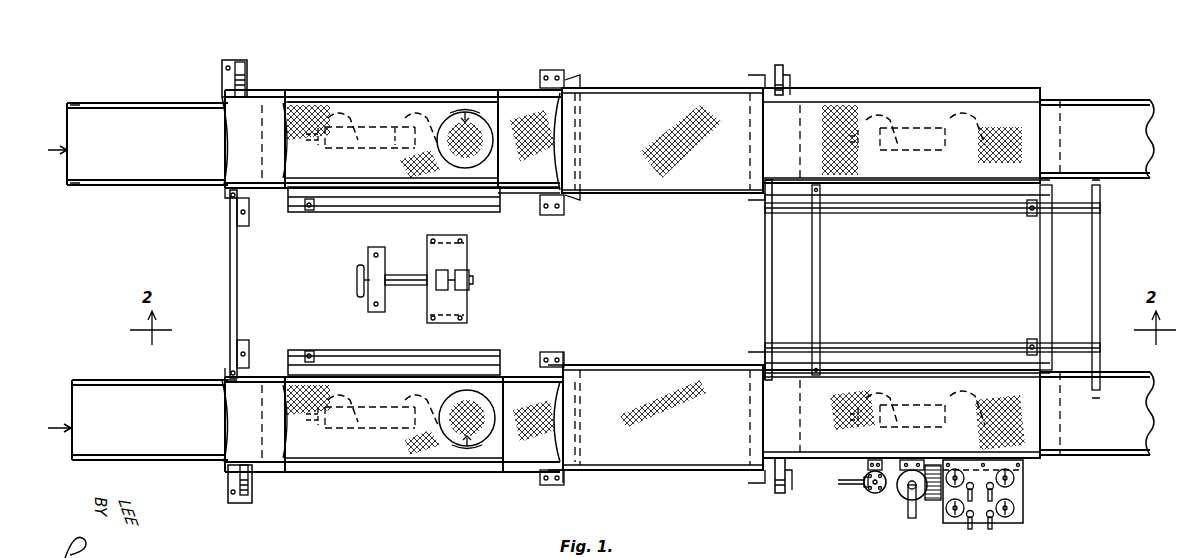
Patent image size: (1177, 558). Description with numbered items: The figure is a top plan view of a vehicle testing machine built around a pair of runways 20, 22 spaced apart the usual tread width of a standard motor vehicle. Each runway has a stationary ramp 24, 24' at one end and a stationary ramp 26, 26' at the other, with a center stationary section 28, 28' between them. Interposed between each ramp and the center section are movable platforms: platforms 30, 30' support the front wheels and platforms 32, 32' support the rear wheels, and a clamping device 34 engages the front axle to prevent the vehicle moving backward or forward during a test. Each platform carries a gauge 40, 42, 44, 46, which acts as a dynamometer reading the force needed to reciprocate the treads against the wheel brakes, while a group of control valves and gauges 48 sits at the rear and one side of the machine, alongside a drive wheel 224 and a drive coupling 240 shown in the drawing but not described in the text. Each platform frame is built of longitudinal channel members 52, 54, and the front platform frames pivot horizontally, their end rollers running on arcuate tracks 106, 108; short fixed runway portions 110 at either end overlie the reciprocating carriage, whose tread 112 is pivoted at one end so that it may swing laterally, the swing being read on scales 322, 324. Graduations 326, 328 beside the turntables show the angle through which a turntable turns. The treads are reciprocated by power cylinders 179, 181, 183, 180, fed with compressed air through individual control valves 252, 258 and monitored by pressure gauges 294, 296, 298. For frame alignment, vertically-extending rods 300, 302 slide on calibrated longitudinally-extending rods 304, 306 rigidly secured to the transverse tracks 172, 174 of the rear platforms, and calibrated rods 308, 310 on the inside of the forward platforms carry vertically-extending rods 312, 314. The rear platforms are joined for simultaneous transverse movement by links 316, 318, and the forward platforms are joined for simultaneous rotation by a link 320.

The runway 20 is at (42, 151).
The runway 22 is at (44, 429).
The stationary ramp 24 is at (147, 163).
The stationary ramp 24' is at (150, 402).
The stationary ramp 26 is at (1097, 158).
The stationary ramp 26' is at (1097, 433).
The center stationary section 28 is at (663, 126).
The center stationary section 28' is at (652, 405).
The platform 30 is at (391, 115).
The platform 30' is at (394, 445).
The platform 32 is at (901, 117).
The platform 32' is at (901, 387).
The clamping device 34 is at (460, 262).
The gauge 40 is at (240, 62).
The gauge 42 is at (244, 495).
The gauge 44 is at (780, 62).
The gauge 46 is at (782, 495).
The control valves and gauges 48 is at (1023, 497).
The longitudinal channel member 52 is at (524, 190).
The longitudinal channel member 54 is at (331, 95).
The arcuate track 106 is at (225, 215).
The arcuate track 108 is at (571, 212).
The fixed runway portion 110 is at (268, 110).
The tread 112 is at (358, 105).
The transverse track 172 is at (765, 280).
The transverse track 174 is at (1115, 235).
The power cylinder 179 is at (384, 408).
The power cylinder 180 is at (932, 430).
The power cylinder 181 is at (380, 150).
The power cylinder 183 is at (932, 152).
The drive wheel 224 is at (906, 518).
The drive coupling 240 is at (868, 490).
The control valve 252 is at (970, 529).
The control valve 258 is at (992, 529).
The gauge 294 is at (950, 488).
The gauge 296 is at (1014, 478).
The gauge 298 is at (1014, 511).
The vertically-extending rod 300 is at (1030, 218).
The vertically-extending rod 302 is at (1030, 338).
The longitudinally-extending rod 304 is at (912, 218).
The longitudinally-extending rod 306 is at (862, 340).
The longitudinally-extending rod 308 is at (348, 210).
The longitudinally-extending rod 310 is at (350, 350).
The vertically-extending rod 312 is at (305, 210).
The vertically-extending rod 314 is at (307, 350).
The link 316 is at (822, 282).
The link 318 is at (1040, 268).
The link 320 is at (228, 262).
The scale 322 is at (279, 422).
The scale 324 is at (276, 158).
The graduations 326 is at (470, 110).
The graduations 328 is at (470, 450).